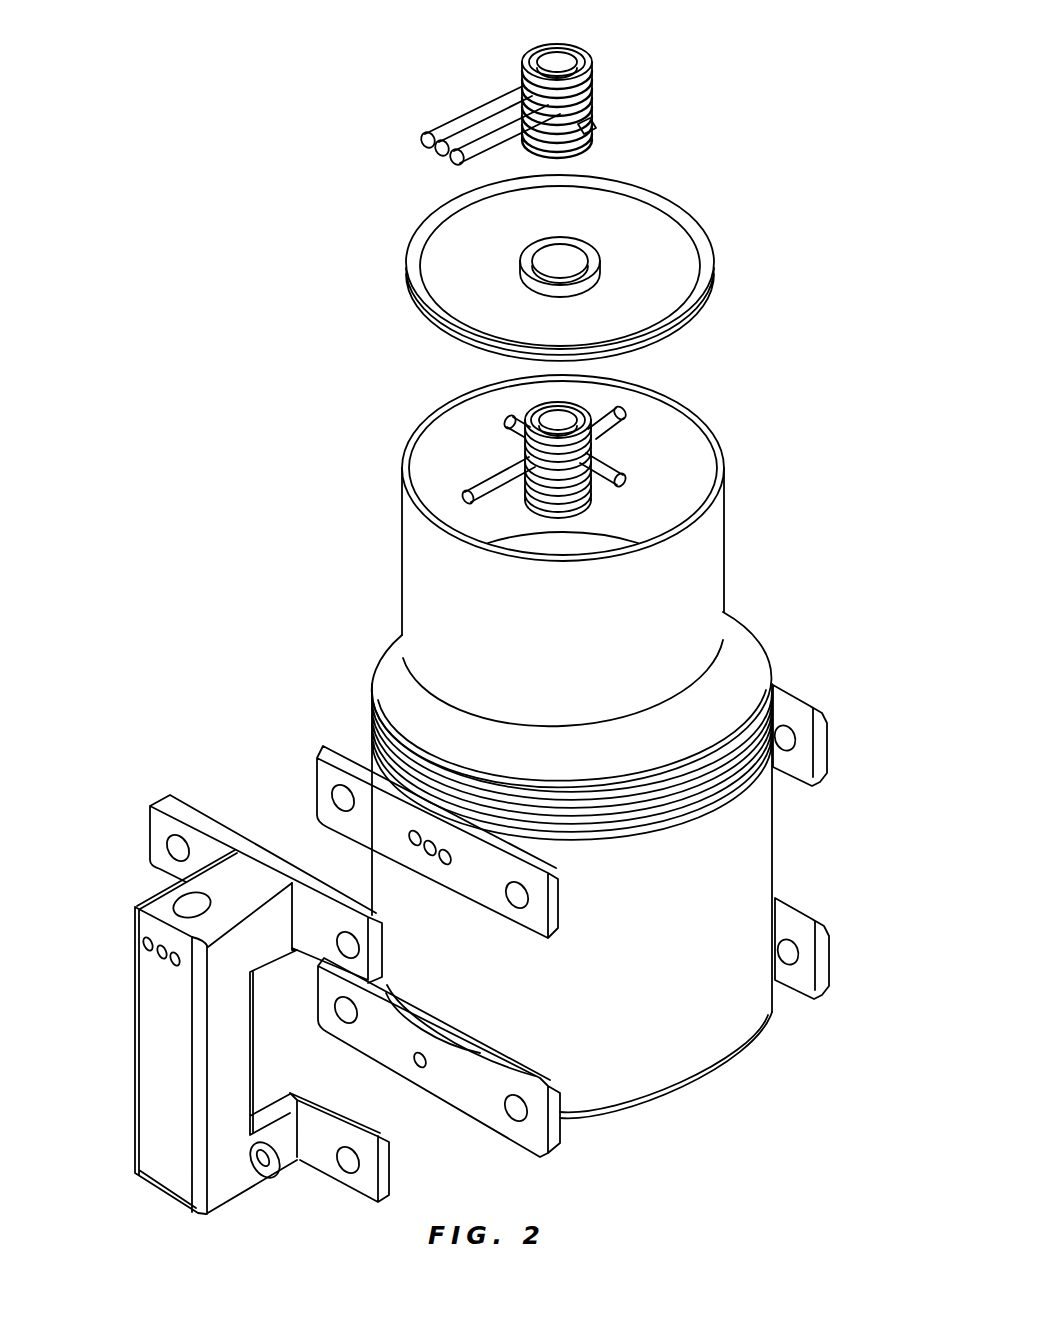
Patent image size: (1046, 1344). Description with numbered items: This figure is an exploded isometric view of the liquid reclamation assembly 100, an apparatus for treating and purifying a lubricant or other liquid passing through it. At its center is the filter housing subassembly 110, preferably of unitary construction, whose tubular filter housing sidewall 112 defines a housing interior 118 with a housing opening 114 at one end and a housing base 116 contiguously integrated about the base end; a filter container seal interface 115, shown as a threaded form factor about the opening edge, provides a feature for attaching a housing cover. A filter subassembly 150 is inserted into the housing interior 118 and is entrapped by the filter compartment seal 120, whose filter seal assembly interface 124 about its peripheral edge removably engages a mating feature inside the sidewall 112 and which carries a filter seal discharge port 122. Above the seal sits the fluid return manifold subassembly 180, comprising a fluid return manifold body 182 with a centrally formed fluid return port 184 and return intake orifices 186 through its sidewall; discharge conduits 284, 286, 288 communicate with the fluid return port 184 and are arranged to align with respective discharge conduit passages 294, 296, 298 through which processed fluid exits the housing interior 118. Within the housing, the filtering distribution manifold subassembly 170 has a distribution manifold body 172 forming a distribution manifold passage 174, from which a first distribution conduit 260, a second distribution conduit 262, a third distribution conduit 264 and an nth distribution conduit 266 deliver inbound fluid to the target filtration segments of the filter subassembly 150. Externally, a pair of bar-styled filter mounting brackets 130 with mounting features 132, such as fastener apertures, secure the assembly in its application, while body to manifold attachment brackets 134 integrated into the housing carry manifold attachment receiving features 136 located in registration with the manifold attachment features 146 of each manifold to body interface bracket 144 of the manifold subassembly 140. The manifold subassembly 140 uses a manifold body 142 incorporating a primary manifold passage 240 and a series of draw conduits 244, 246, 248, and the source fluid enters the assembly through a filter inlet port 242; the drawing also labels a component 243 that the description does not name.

The liquid reclamation assembly 100 is at (180, 315).
The filter housing subassembly 110 is at (716, 1118).
The tubular filter housing sidewall 112 is at (695, 1030).
The housing opening 114 is at (387, 680).
The filter container seal interface 115 is at (672, 803).
The housing base 116 is at (645, 1117).
The housing interior 118 is at (714, 700).
The filter compartment seal 120 is at (450, 267).
The filter seal discharge port 122 is at (558, 250).
The filter seal assembly interface 124 is at (425, 320).
The filter mounting bracket 130 is at (820, 762).
The mounting feature 132 is at (783, 972).
The body to manifold attachment bracket 134 is at (553, 913).
The manifold attachment receiving feature 136 is at (513, 905).
The manifold subassembly 140 is at (102, 838).
The manifold body 142 is at (163, 1160).
The manifold to body interface bracket 144 is at (386, 1162).
The manifold attachment feature 146 is at (350, 1170).
The filter subassembly 150 is at (613, 688).
The filtering distribution manifold subassembly 170 is at (620, 438).
The distribution manifold body 172 is at (582, 513).
The distribution manifold passage 174 is at (553, 392).
The fluid return manifold subassembly 180 is at (628, 72).
The fluid return manifold body 182 is at (595, 103).
The fluid return port 184 is at (555, 50).
The return intake orifice 186 is at (592, 133).
The primary manifold passage 240 is at (175, 892).
The filter inlet port 242 is at (421, 1067).
The fastener 243 is at (248, 1175).
The draw conduit 244 is at (145, 943).
The draw conduit 246 is at (160, 954).
The draw conduit 248 is at (172, 962).
The first distribution conduit 260 is at (520, 415).
The second distribution conduit 262 is at (616, 407).
The third distribution conduit 264 is at (610, 458).
The nth distribution conduit 266 is at (490, 476).
The discharge conduit 284 is at (440, 130).
The discharge conduit 286 is at (463, 130).
The discharge conduit 288 is at (492, 132).
The discharge conduit passage 294 is at (412, 840).
The discharge conduit passage 296 is at (427, 851).
The discharge conduit passage 298 is at (445, 864).